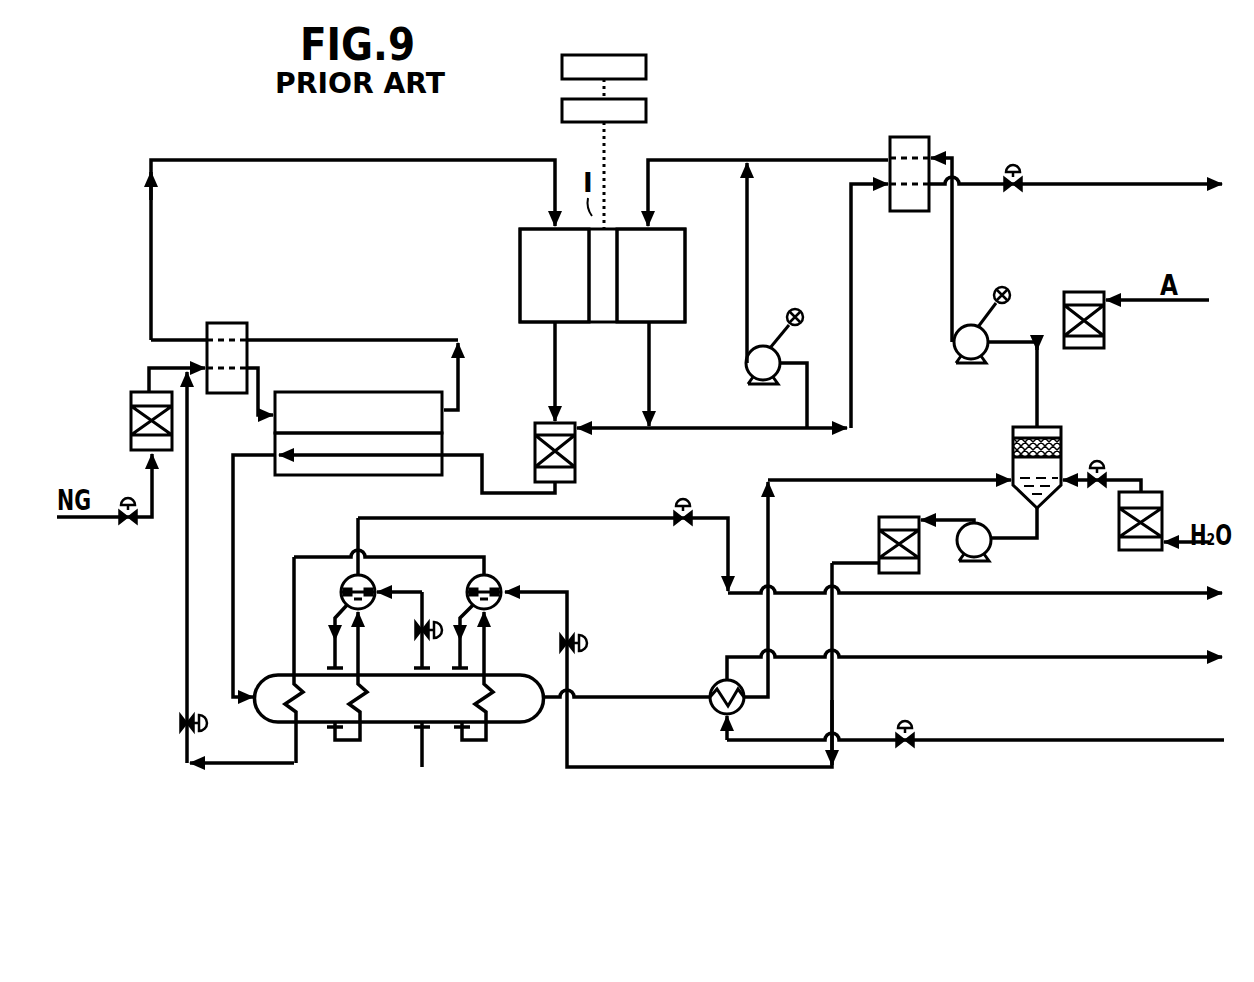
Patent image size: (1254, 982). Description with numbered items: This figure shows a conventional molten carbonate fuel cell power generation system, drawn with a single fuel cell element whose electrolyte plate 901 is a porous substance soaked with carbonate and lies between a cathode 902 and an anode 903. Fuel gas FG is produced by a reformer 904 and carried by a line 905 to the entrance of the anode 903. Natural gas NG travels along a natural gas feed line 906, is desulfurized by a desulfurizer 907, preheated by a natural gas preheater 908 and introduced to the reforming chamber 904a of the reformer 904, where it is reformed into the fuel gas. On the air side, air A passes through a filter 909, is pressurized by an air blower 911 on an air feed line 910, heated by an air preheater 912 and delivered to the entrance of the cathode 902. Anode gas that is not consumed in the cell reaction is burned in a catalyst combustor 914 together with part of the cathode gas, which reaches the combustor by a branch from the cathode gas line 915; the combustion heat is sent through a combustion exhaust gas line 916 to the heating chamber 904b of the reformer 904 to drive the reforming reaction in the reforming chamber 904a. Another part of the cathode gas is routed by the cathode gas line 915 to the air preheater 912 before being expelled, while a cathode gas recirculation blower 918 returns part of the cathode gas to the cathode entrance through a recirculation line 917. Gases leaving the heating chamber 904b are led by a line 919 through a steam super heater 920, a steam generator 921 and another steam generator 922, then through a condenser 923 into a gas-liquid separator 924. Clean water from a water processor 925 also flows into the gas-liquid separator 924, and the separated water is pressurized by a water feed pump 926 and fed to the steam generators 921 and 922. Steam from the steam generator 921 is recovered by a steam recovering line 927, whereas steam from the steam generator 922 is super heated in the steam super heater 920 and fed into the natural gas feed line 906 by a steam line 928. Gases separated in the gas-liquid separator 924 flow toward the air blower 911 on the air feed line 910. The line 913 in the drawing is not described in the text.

The electrolyte plate 901 is at (612, 258).
The cathode 902 is at (664, 293).
The anode 903 is at (566, 293).
The reformer 904 is at (321, 435).
The reforming chamber 904a is at (402, 372).
The heating chamber 904b is at (352, 463).
The line 905 is at (226, 141).
The natural gas feed line 906 is at (163, 366).
The desulfurizer 907 is at (132, 400).
The natural gas preheater 908 is at (268, 306).
The filter 909 is at (1113, 267).
The air feed line 910 is at (952, 258).
The air blower 911 is at (971, 365).
The air preheater 912 is at (896, 146).
The oxidant exhaust line 913 is at (583, 386).
The catalyst combustor 914 is at (533, 427).
The cathode gas line 915 is at (684, 370).
The combustion exhaust gas line 916 is at (543, 493).
The recirculation line 917 is at (748, 233).
The cathode gas recirculation blower 918 is at (748, 365).
The line 919 is at (233, 628).
The steam super heater 920 is at (308, 700).
The steam generator 921 is at (364, 700).
The steam generator 922 is at (490, 700).
The condenser 923 is at (712, 685).
The gas-liquid separator 924 is at (1051, 465).
The water processor 925 is at (1152, 498).
The water feed pump 926 is at (990, 552).
The steam recovering line 927 is at (530, 518).
The steam line 928 is at (187, 588).